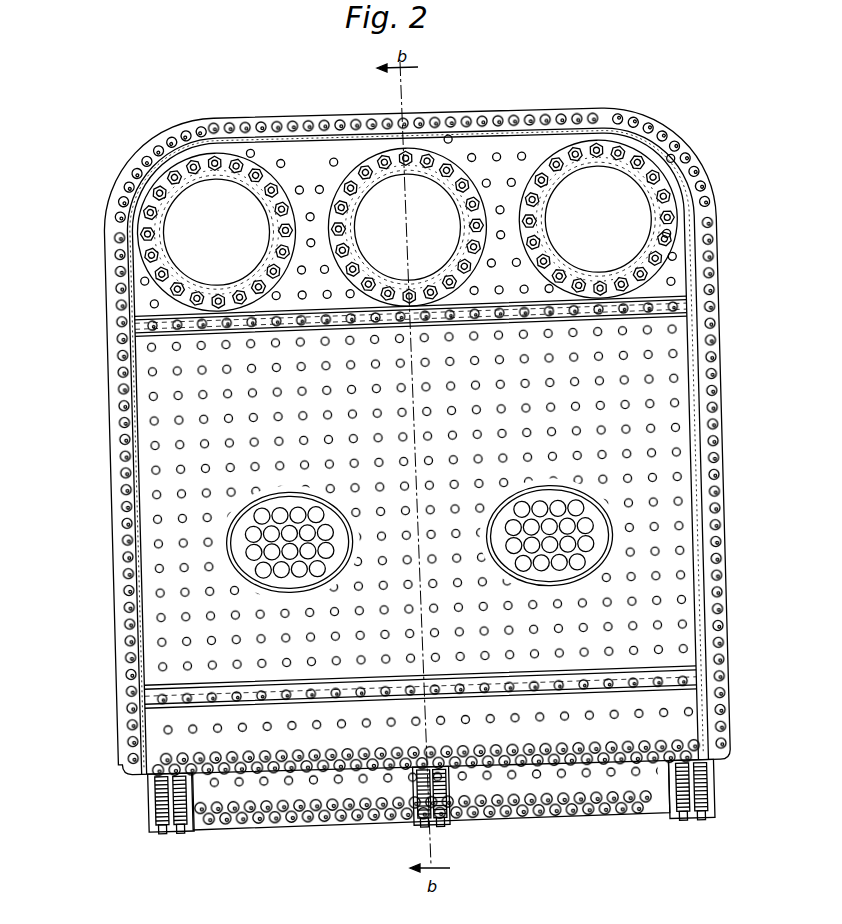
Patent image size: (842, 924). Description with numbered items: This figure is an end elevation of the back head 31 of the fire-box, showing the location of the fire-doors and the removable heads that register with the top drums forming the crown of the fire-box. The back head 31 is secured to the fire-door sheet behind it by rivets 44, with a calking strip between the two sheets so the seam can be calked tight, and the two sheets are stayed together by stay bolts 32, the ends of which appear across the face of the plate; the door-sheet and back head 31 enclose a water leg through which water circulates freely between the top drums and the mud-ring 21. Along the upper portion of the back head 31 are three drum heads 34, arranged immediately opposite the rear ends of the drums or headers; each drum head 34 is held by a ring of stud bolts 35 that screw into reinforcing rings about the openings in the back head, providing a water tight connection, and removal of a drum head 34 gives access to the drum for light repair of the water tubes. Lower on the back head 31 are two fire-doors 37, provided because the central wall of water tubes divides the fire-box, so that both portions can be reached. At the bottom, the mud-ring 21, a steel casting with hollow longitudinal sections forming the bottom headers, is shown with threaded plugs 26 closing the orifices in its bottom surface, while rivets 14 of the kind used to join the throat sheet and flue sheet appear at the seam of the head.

The rivets 14 is at (128, 748).
The mud-ring 21 is at (148, 808).
The threaded plugs 26 is at (180, 834).
The back head 31 is at (160, 405).
The stay bolts 32 is at (658, 425).
The drum heads 34 is at (387, 197).
The stud bolts 35 is at (438, 162).
The fire-doors 37 is at (247, 548).
The rivets 44 is at (597, 110).